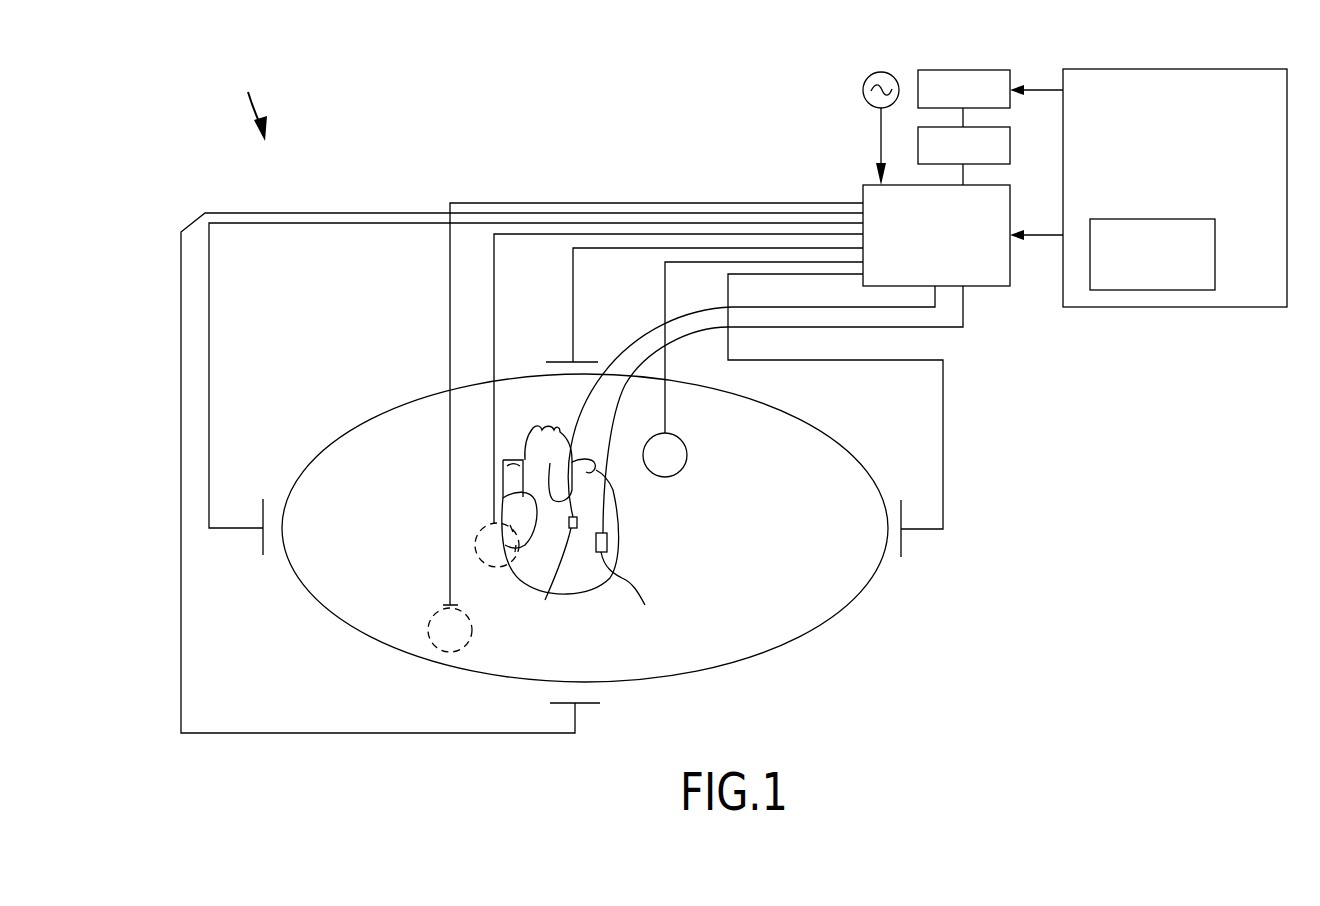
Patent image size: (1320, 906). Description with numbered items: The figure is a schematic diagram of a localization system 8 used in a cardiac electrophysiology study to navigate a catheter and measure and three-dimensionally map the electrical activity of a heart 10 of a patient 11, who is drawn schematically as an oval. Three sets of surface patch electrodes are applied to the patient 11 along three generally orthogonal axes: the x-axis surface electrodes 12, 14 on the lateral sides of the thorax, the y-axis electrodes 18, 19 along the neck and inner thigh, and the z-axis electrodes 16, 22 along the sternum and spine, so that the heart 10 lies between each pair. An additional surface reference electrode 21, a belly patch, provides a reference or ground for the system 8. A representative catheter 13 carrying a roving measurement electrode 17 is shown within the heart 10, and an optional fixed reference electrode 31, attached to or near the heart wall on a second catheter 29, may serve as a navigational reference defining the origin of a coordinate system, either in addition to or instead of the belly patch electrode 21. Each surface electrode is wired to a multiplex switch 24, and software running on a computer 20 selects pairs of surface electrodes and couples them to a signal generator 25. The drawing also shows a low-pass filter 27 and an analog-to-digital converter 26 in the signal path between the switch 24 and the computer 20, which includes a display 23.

The localization system 8 is at (254, 99).
The heart 10 is at (612, 540).
The patient 11 is at (810, 410).
The x-axis surface electrode 12 is at (562, 360).
The catheter 13 is at (963, 316).
The x-axis surface electrode 14 is at (578, 713).
The z-axis electrode 16 is at (667, 400).
The catheter electrode 17 is at (628, 593).
The y-axis electrode 18 is at (261, 548).
The y-axis electrode 19 is at (904, 535).
The computer 20 is at (1245, 293).
The surface reference electrode 21 is at (450, 540).
The z-axis electrode 22 is at (495, 290).
The display 23 is at (1141, 280).
The multiplex switch 24 is at (925, 262).
The signal generator 25 is at (866, 78).
The analog-to-digital converter 26 is at (978, 70).
The low-pass filter 27 is at (1010, 146).
The second catheter 29 is at (580, 398).
The fixed reference electrode 31 is at (552, 582).